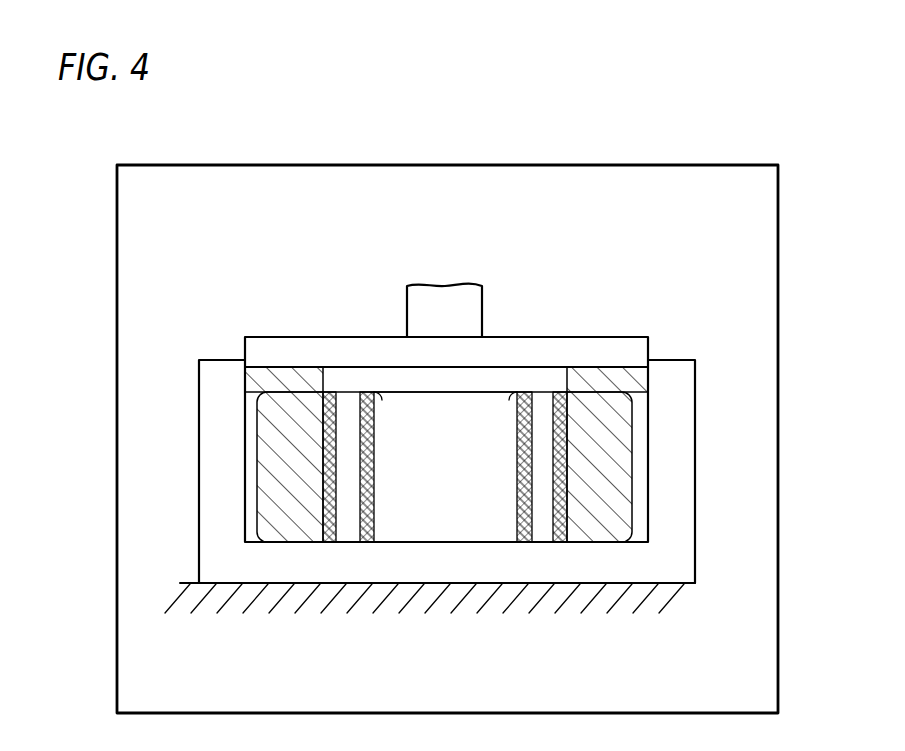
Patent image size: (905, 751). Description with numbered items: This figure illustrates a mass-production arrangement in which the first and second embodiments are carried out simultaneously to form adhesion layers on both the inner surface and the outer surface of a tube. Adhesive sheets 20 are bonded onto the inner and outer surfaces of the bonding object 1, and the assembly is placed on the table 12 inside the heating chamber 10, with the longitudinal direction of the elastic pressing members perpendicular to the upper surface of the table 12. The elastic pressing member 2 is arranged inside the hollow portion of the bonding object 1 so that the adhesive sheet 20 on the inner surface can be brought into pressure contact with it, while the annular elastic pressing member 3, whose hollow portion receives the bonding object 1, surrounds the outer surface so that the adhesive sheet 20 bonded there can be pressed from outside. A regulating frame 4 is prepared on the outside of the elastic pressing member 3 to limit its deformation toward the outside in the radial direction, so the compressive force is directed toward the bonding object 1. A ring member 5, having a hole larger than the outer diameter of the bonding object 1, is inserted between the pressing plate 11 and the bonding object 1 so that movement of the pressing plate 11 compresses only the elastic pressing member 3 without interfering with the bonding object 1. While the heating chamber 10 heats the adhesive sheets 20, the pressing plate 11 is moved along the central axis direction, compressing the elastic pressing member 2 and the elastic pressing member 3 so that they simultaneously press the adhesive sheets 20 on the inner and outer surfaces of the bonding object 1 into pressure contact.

The bonding object 1 is at (542, 520).
The elastic pressing member 2 is at (415, 530).
The elastic pressing member 3 is at (612, 487).
The regulating frame 4 is at (673, 417).
The ring member 5 is at (650, 361).
The heating chamber 10 is at (597, 162).
The pressing plate 11 is at (530, 343).
The table 12 is at (655, 585).
The adhesive sheet 20 is at (568, 527).